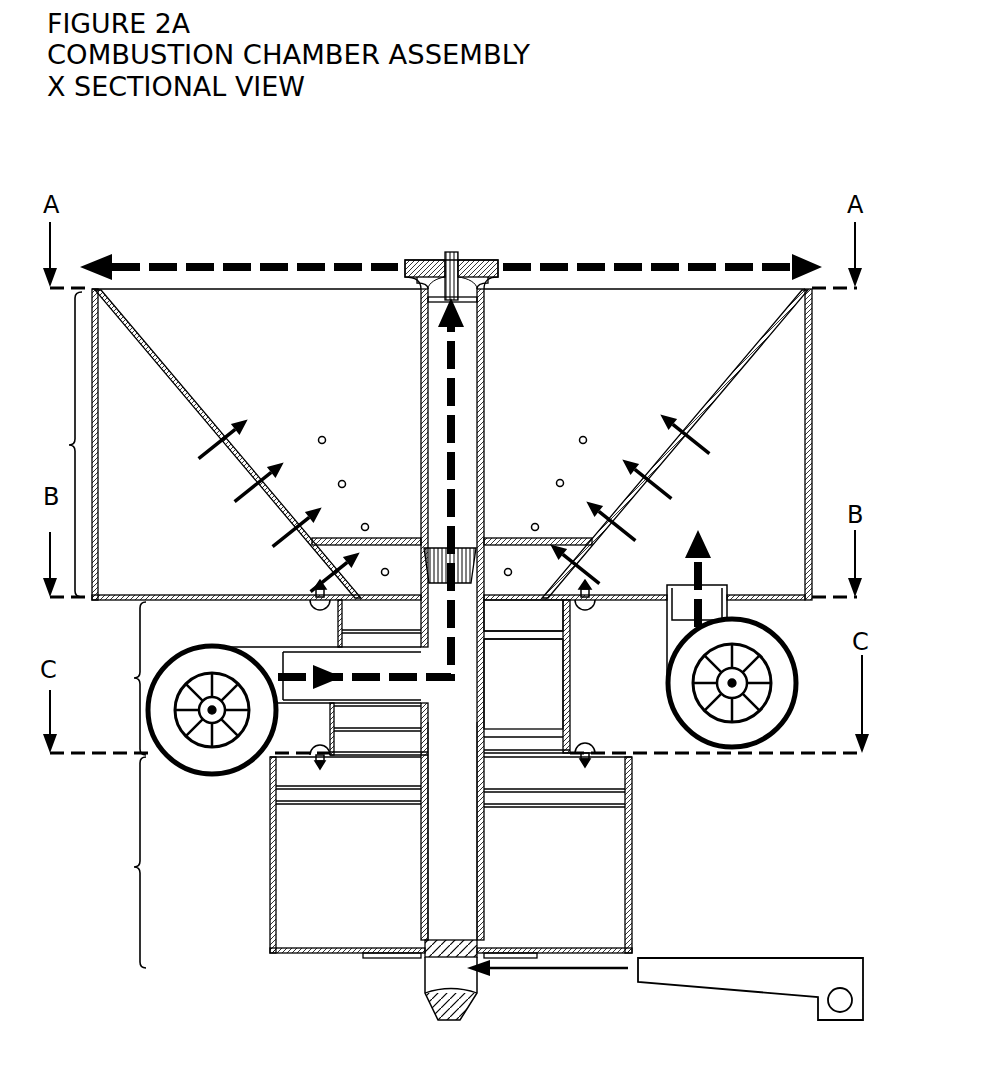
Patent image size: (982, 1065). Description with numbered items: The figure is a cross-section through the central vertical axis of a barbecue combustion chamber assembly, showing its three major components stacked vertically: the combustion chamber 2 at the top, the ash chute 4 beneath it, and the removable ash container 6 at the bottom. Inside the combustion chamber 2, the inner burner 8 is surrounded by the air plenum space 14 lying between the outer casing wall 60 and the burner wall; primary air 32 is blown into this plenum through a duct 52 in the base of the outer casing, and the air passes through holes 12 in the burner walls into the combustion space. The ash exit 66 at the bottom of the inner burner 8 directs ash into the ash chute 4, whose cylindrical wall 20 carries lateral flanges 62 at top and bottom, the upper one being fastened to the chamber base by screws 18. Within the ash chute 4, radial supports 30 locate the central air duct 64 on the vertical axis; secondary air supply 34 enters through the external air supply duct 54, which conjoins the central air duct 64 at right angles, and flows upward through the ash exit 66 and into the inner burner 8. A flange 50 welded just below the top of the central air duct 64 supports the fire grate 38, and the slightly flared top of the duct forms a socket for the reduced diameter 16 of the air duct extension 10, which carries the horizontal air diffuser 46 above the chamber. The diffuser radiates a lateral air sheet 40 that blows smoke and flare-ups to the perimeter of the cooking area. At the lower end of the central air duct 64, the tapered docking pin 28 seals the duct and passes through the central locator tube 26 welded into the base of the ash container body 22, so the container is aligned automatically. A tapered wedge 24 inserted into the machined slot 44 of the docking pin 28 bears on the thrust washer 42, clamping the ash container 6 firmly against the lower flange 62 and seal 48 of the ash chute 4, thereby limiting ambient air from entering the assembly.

The combustion chamber 2 is at (66, 444).
The ash chute 4 is at (129, 678).
The ash container 6 is at (129, 862).
The inner burner 8 is at (572, 393).
The air duct extension 10 is at (423, 364).
The holes 12 is at (206, 513).
The air plenum space 14 is at (741, 515).
The reduced diameter 16 is at (452, 550).
The screws 18 is at (573, 603).
The ash chute wall 20 is at (570, 672).
The ash container body 22 is at (270, 907).
The tapered wedge 24 is at (715, 957).
The central locator tube 26 is at (485, 873).
The docking pin 28 is at (463, 845).
The radial supports 30 is at (343, 792).
The primary air 32 is at (749, 683).
The secondary air supply 34 is at (212, 724).
The fire grate 38 is at (527, 540).
The lateral air sheet 40 is at (653, 253).
The thrust washer 42 is at (395, 958).
The machined slot 44 is at (458, 980).
The horizontal air diffuser 46 is at (480, 262).
The seal 48 is at (598, 753).
The flange 50 is at (497, 548).
The duct 52 is at (728, 612).
The air supply duct 54 is at (310, 705).
The outer casing wall 60 is at (100, 450).
The lateral flanges 62 is at (598, 750).
The central air duct 64 is at (487, 678).
The ash exit 66 is at (523, 615).